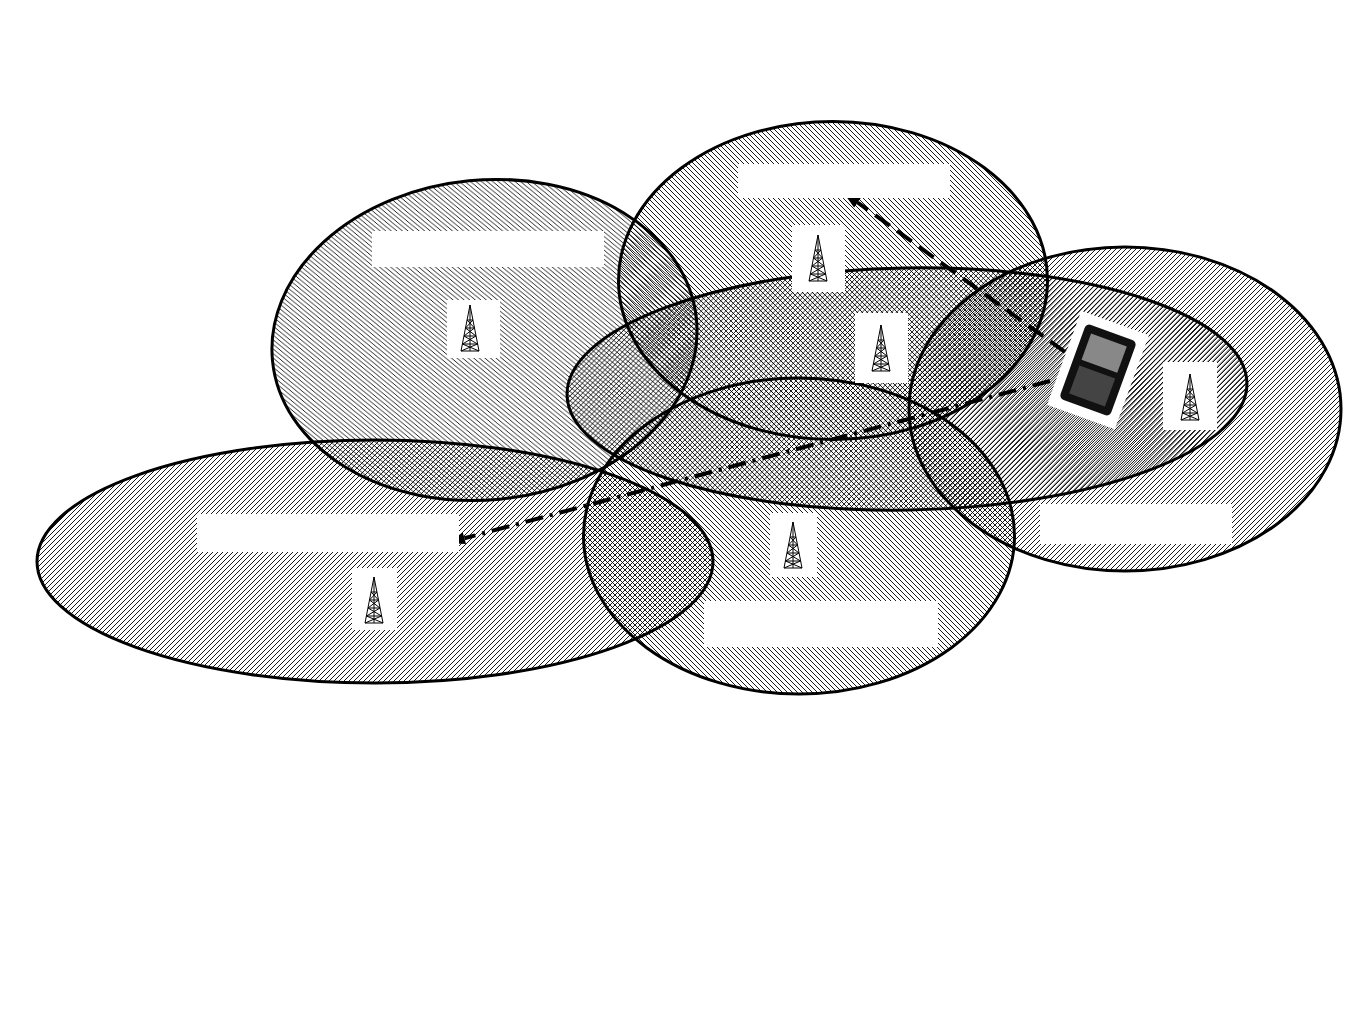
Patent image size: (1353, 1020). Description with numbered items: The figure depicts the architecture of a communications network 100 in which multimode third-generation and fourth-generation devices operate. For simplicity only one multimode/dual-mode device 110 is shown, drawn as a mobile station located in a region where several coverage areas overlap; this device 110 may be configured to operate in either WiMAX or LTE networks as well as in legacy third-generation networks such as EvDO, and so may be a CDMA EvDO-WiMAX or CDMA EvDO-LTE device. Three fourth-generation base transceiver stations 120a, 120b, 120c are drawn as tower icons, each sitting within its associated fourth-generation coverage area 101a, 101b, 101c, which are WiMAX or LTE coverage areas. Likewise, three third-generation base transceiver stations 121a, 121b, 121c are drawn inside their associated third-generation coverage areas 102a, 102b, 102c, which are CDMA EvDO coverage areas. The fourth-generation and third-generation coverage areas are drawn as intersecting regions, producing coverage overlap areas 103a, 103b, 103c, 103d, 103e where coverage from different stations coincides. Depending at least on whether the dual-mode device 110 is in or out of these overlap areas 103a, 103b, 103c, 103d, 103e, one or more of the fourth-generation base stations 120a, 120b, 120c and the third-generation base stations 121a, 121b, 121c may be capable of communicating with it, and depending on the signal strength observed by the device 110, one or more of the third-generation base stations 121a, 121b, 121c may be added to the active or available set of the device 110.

The communications network 100 is at (167, 50).
The 4G coverage area 101a is at (484, 332).
The 4G coverage area 101b is at (833, 263).
The 4G coverage area 101c is at (799, 541).
The 3G coverage area 102a is at (375, 583).
The 3G coverage area 102b is at (1085, 270).
The 3G coverage area 102c is at (1125, 409).
The 4G coverage overlap area 103a is at (458, 465).
The 4G coverage overlap area 103b is at (804, 477).
The 4G coverage overlap area 103c is at (799, 342).
The 4G coverage overlap area 103d is at (1054, 470).
The 4G coverage overlap area 103e is at (658, 580).
The multimode/dual-mode 3G/4G device 110 is at (1137, 319).
The 4G base station 120a is at (439, 329).
The 4G base station 120b is at (780, 258).
The 4G base station 120c is at (830, 545).
The 3G base station 121a is at (405, 599).
The 3G base station 121b is at (894, 338).
The 3G base station 121c is at (1189, 383).